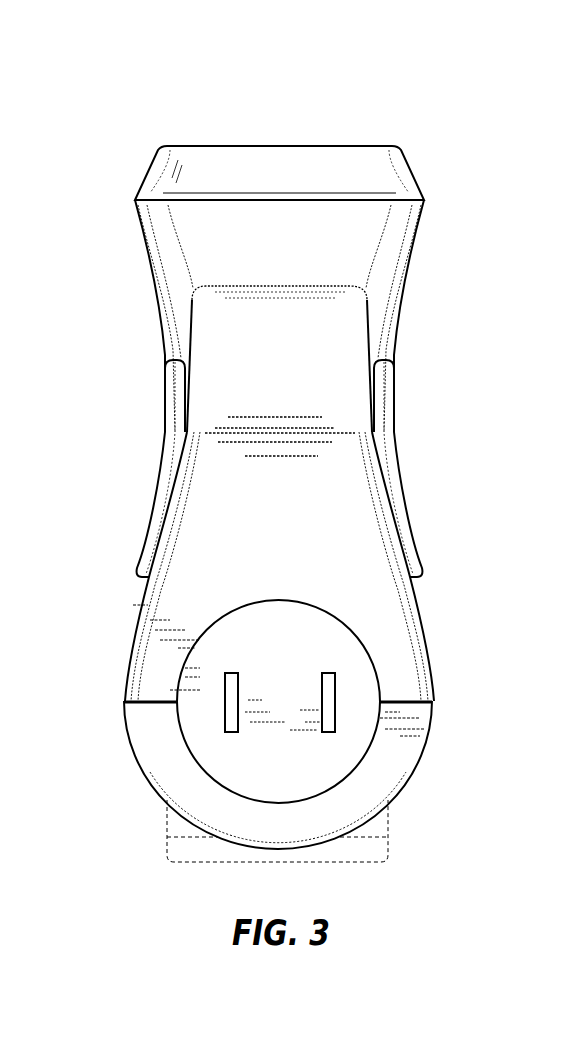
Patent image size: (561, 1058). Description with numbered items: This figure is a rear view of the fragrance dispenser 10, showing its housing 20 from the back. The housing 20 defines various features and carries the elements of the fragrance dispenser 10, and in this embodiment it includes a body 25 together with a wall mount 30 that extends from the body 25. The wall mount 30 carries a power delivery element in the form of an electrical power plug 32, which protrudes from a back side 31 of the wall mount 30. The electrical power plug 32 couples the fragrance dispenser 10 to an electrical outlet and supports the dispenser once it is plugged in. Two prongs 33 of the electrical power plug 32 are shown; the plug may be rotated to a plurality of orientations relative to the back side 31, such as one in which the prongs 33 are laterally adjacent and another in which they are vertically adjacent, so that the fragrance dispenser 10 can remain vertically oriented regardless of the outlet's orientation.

The fragrance dispenser 10 is at (150, 90).
The housing 20 is at (478, 355).
The body 25 is at (385, 334).
The wall mount 30 is at (386, 478).
The back side 31 is at (370, 605).
The electrical power plug 32 is at (346, 695).
The prongs 33 is at (238, 706).